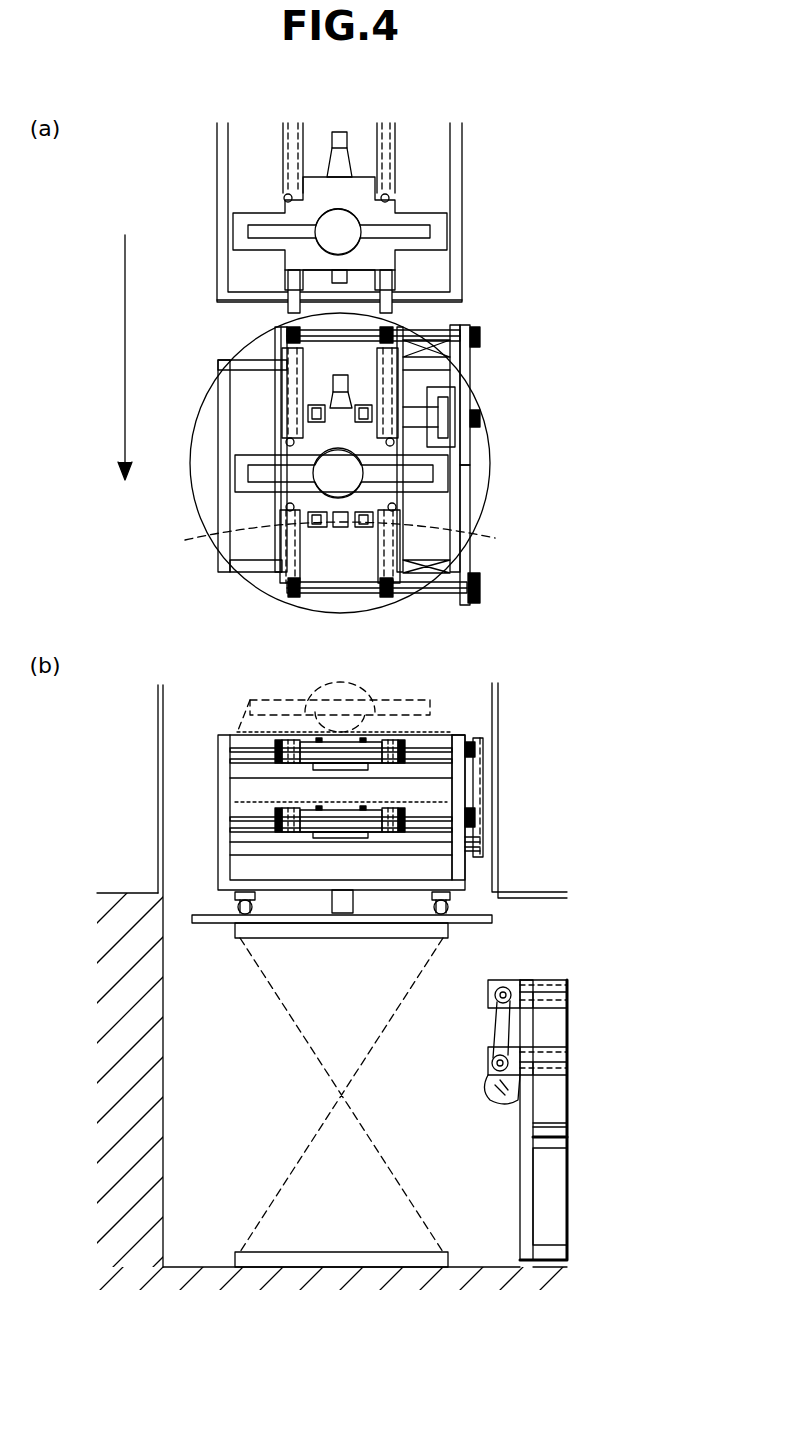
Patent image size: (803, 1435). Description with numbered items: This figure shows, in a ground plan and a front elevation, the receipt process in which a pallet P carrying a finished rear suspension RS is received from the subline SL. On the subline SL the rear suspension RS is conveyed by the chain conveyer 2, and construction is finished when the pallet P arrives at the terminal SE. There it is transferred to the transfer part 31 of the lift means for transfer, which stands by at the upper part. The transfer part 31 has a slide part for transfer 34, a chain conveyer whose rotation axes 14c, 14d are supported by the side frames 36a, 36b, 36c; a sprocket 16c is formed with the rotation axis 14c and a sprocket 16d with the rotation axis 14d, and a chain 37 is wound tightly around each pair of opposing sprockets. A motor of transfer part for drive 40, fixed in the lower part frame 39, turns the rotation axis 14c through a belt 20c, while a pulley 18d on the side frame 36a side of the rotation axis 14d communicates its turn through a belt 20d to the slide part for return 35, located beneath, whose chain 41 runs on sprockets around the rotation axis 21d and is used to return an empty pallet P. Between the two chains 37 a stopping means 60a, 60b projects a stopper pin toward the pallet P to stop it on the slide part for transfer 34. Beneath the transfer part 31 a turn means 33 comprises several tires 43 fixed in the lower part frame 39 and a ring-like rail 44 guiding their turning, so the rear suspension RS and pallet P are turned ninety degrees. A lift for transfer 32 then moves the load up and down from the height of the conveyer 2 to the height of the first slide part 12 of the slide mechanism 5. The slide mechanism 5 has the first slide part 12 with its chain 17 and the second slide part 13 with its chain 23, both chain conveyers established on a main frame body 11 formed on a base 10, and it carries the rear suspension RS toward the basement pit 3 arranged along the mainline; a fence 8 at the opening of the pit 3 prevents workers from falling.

The subline SL is at (216, 148).
The terminal SE is at (218, 300).
The chain conveyer 2 is at (284, 150).
The pallet P is at (378, 176).
The rear suspension RS is at (410, 230).
The basement pit 3 is at (248, 1105).
The slide mechanism 5 is at (602, 1112).
The fence 8 is at (157, 705).
The base 10 is at (525, 1205).
The main frame body 11 is at (528, 1118).
The first slide part 12 is at (548, 978).
The second slide part 13 is at (548, 1046).
The rotation axis 14c is at (430, 334).
The rotation axis 14d is at (440, 595).
The sprocket 16c is at (285, 333).
The sprocket 16d is at (294, 597).
The chain 17 is at (488, 983).
The pulley 18d is at (478, 745).
The belt 20c is at (482, 372).
The belt 20d is at (482, 586).
The rotation axis 21d is at (478, 850).
The chain 23 is at (488, 1052).
The transfer part 31 is at (215, 566).
The lift for transfer 32 is at (250, 1185).
The turn means 33 is at (225, 903).
The slide part for transfer 34 is at (285, 550).
The slide part for return 35 is at (240, 842).
The side frame 36a is at (456, 738).
The side frame 36b is at (390, 766).
The side frame 36c is at (290, 766).
The chain 37 is at (185, 540).
The lower part frame 39 is at (240, 856).
The motor of transfer part for drive 40 is at (440, 413).
The chain 41 is at (293, 836).
The tire 43 is at (245, 912).
The rail 44 is at (215, 470).
The stopping means 60a is at (313, 528).
The stopping means 60b is at (355, 416).